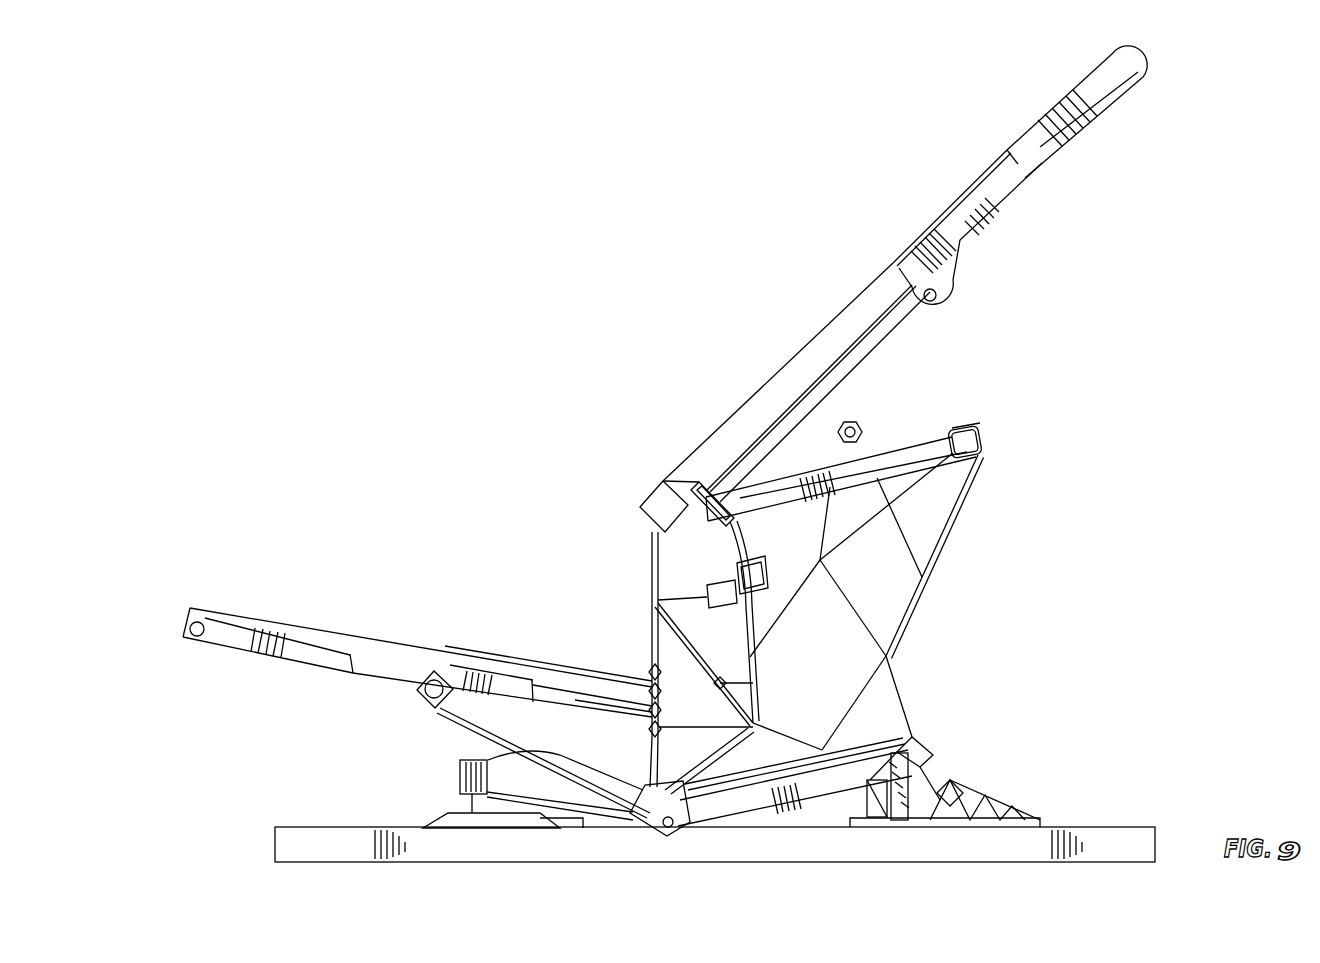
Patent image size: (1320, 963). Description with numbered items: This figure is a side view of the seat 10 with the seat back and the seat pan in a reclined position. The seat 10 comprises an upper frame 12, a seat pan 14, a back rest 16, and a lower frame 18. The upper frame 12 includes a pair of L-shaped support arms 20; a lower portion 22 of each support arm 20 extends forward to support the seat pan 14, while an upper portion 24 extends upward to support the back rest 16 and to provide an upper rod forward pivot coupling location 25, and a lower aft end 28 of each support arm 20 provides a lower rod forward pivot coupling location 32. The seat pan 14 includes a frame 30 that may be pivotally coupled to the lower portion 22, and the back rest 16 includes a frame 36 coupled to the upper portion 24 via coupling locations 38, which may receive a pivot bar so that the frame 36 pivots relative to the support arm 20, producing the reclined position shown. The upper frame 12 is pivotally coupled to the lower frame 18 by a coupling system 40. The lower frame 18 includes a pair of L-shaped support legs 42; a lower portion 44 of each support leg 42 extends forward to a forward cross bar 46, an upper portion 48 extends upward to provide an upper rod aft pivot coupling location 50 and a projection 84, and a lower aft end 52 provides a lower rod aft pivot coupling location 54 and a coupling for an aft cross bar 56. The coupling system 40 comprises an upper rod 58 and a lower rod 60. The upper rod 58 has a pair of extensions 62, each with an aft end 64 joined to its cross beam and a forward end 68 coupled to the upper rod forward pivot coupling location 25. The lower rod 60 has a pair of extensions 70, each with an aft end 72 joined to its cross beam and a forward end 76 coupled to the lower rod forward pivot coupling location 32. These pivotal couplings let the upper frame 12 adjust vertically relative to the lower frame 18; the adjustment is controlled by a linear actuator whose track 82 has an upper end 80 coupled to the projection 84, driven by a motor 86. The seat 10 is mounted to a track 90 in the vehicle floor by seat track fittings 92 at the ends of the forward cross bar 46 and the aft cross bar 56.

The seat 10 is at (490, 378).
The upper frame 12 is at (652, 570).
The seat pan 14 is at (228, 612).
The back rest 16 is at (1110, 75).
The lower frame 18 is at (890, 600).
The support arm 20 is at (652, 627).
The lower portion 22 is at (563, 738).
The upper portion 24 is at (650, 575).
The upper rod forward pivot coupling location 25 is at (675, 478).
The lower aft end 28 is at (642, 795).
The frame 30 is at (300, 643).
The lower rod forward pivot coupling location 32 is at (667, 830).
The frame 36 is at (852, 300).
The coupling locations 38 is at (428, 690).
The coupling system 40 is at (765, 480).
The support leg 42 is at (860, 650).
The lower portion 44 is at (507, 778).
The forward cross bar 46 is at (460, 776).
The upper portion 48 is at (935, 512).
The upper rod aft pivot coupling location 50 is at (976, 432).
The lower aft end 52 is at (890, 725).
The lower rod aft pivot coupling location 54 is at (900, 773).
The aft cross bar 56 is at (935, 765).
The upper rod 58 is at (985, 455).
The lower rod 60 is at (777, 807).
The extension 62 is at (700, 490).
The aft end 64 is at (952, 430).
The forward end 68 is at (750, 512).
The extension 70 is at (747, 803).
The aft end 72 is at (887, 777).
The forward end 76 is at (678, 812).
The upper end 80 is at (825, 470).
The track 82 is at (860, 425).
The projection 84 is at (965, 480).
The motor 86 is at (830, 800).
The track 90 is at (290, 847).
The seat track fittings 92 is at (1005, 805).